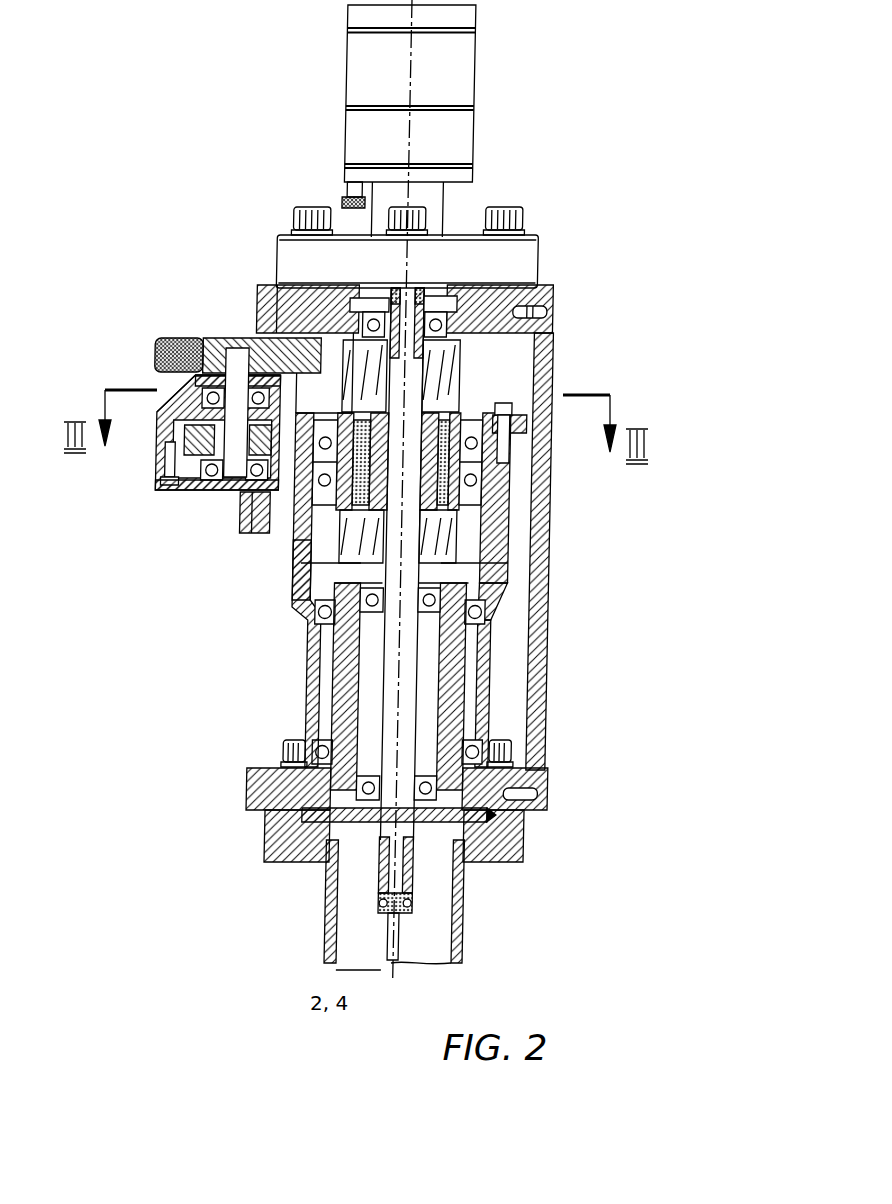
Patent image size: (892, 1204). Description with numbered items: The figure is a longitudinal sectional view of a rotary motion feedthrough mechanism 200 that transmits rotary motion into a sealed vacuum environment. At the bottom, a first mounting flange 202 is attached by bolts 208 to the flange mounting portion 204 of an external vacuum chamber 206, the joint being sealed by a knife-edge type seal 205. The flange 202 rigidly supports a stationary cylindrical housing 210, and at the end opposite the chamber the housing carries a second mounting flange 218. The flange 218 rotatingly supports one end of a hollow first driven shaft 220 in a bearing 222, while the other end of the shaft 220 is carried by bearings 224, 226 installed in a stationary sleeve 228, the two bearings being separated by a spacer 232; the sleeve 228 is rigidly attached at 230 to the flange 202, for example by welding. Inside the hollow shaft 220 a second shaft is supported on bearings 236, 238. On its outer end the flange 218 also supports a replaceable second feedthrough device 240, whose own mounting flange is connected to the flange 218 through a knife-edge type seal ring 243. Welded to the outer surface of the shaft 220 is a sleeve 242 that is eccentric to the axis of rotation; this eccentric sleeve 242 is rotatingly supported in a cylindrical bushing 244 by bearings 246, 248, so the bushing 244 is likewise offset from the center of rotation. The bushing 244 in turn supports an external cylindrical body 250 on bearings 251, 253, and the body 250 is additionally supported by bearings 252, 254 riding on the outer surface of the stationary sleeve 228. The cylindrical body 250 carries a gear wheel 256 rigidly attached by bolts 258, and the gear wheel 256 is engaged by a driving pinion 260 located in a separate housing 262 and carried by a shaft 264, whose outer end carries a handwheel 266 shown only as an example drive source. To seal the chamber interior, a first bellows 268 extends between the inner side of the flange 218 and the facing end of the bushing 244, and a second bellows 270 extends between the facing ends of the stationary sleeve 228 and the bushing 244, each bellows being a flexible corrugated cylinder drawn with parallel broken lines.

The feedthrough mechanism 200 is at (592, 490).
The mounting flange 202 is at (285, 748).
The flange mounting portion 204 is at (283, 845).
The knife-edge type seal 205 is at (477, 827).
The external vacuum chamber 206 is at (305, 928).
The bolts 208 is at (300, 815).
The stationary cylindrical housing 210 is at (553, 530).
The second mounting flange 218 is at (290, 313).
The first driven shaft 220 is at (357, 283).
The bearing 222 is at (357, 300).
The bearing 224 is at (307, 668).
The bearing 226 is at (492, 792).
The stationary sleeve 228 is at (343, 707).
The attachment point 230 is at (548, 815).
The spacer 232 is at (500, 672).
The bearing 236 is at (417, 912).
The bearing 238 is at (457, 283).
The second feedthrough device 240 is at (362, 78).
The sleeve 242 is at (292, 573).
The knife-edge type seal ring 243 is at (520, 283).
The cylindrical bushing 244 is at (297, 510).
The bearing 246 is at (470, 477).
The bearing 248 is at (457, 412).
The external cylindrical body 250 is at (330, 620).
The bearing 251 is at (478, 500).
The bearing 252 is at (490, 618).
The bearing 253 is at (240, 494).
The bearing 254 is at (497, 736).
The gear wheel 256 is at (528, 422).
The bolts 258 is at (510, 403).
The driving gear or pinion 260 is at (192, 417).
The housing 262 is at (157, 447).
The shaft 264 is at (185, 392).
The handwheel 266 is at (162, 342).
The first bellows 268 is at (355, 367).
The second bellows 270 is at (505, 548).